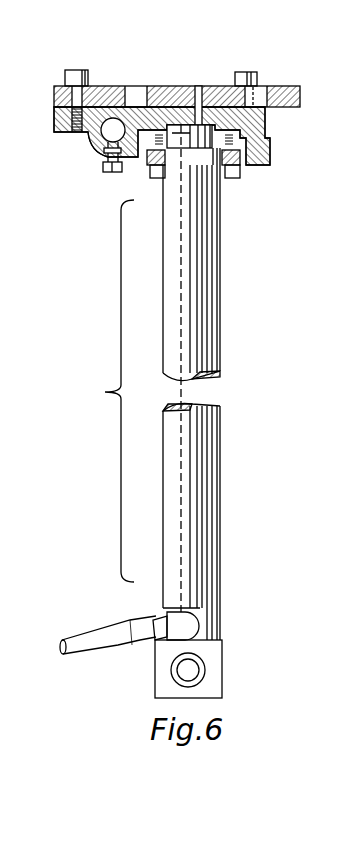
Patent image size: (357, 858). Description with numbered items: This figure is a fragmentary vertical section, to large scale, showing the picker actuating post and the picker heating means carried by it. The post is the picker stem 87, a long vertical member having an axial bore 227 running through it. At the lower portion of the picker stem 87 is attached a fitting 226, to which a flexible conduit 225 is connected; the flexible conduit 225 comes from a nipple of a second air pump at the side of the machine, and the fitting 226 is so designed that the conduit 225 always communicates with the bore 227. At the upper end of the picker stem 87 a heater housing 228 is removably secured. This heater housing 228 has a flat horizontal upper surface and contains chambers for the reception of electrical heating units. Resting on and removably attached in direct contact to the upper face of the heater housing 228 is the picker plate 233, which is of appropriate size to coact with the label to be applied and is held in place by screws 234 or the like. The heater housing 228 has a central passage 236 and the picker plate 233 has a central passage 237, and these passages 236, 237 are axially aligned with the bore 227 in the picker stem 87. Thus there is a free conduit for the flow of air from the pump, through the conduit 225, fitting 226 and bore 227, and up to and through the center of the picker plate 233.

The picker stem 87 is at (220, 476).
The flexible conduit 225 is at (101, 630).
The fitting 226 is at (192, 624).
The axial bore 227 is at (197, 554).
The heater housing 228 is at (267, 125).
The picker plate 233 is at (287, 86).
The screws 234 is at (66, 70).
The central passage 236 is at (193, 124).
The central passage 237 is at (194, 106).